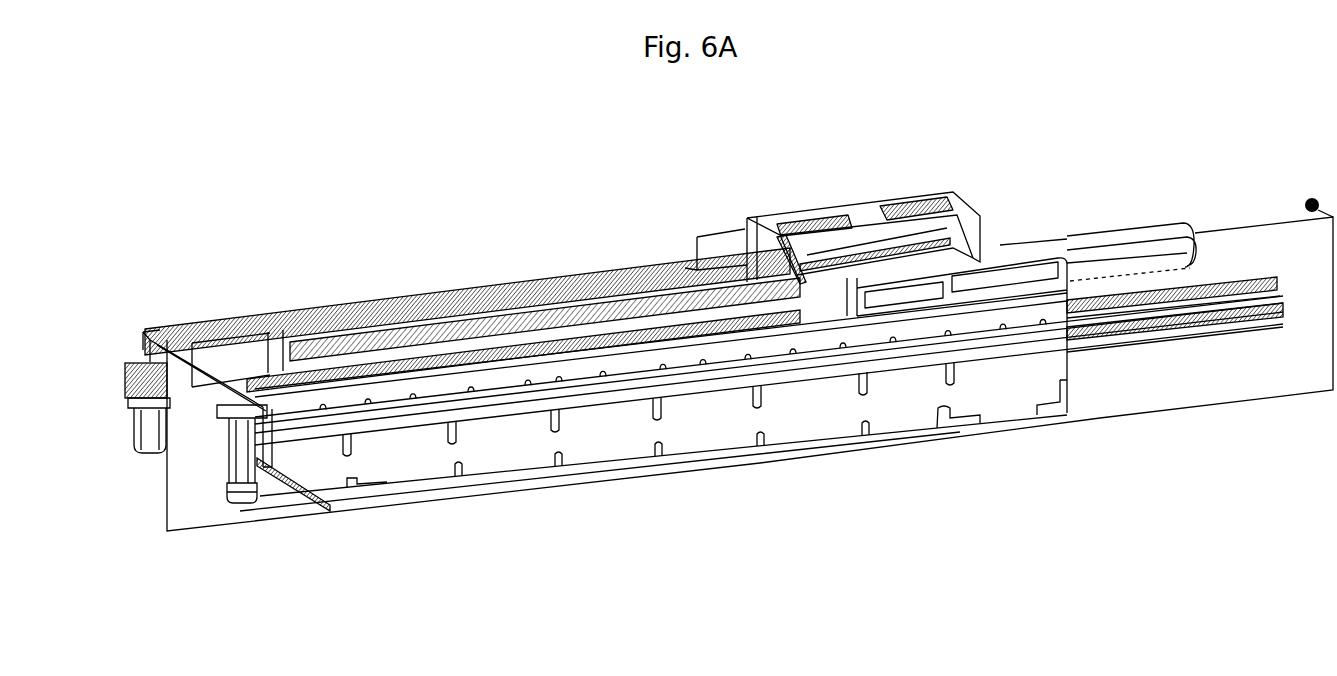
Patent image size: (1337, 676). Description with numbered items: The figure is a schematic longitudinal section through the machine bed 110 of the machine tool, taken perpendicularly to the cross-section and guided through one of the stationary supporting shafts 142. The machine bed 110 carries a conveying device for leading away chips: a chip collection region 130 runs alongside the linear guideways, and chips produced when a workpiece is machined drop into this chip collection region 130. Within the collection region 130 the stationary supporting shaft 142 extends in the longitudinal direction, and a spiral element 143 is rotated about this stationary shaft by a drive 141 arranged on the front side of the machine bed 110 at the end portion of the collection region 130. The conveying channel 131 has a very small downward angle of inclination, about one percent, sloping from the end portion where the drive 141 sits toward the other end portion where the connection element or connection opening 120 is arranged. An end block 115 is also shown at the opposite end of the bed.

The machine bed 110 is at (763, 530).
The end block 115 is at (1010, 255).
The connection opening 120 is at (1207, 287).
The chip collection region 130 is at (498, 373).
The conveying channel 131 is at (325, 587).
The drive 141 is at (237, 587).
The stationary supporting shaft 142 is at (572, 552).
The spiral element 143 is at (400, 580).